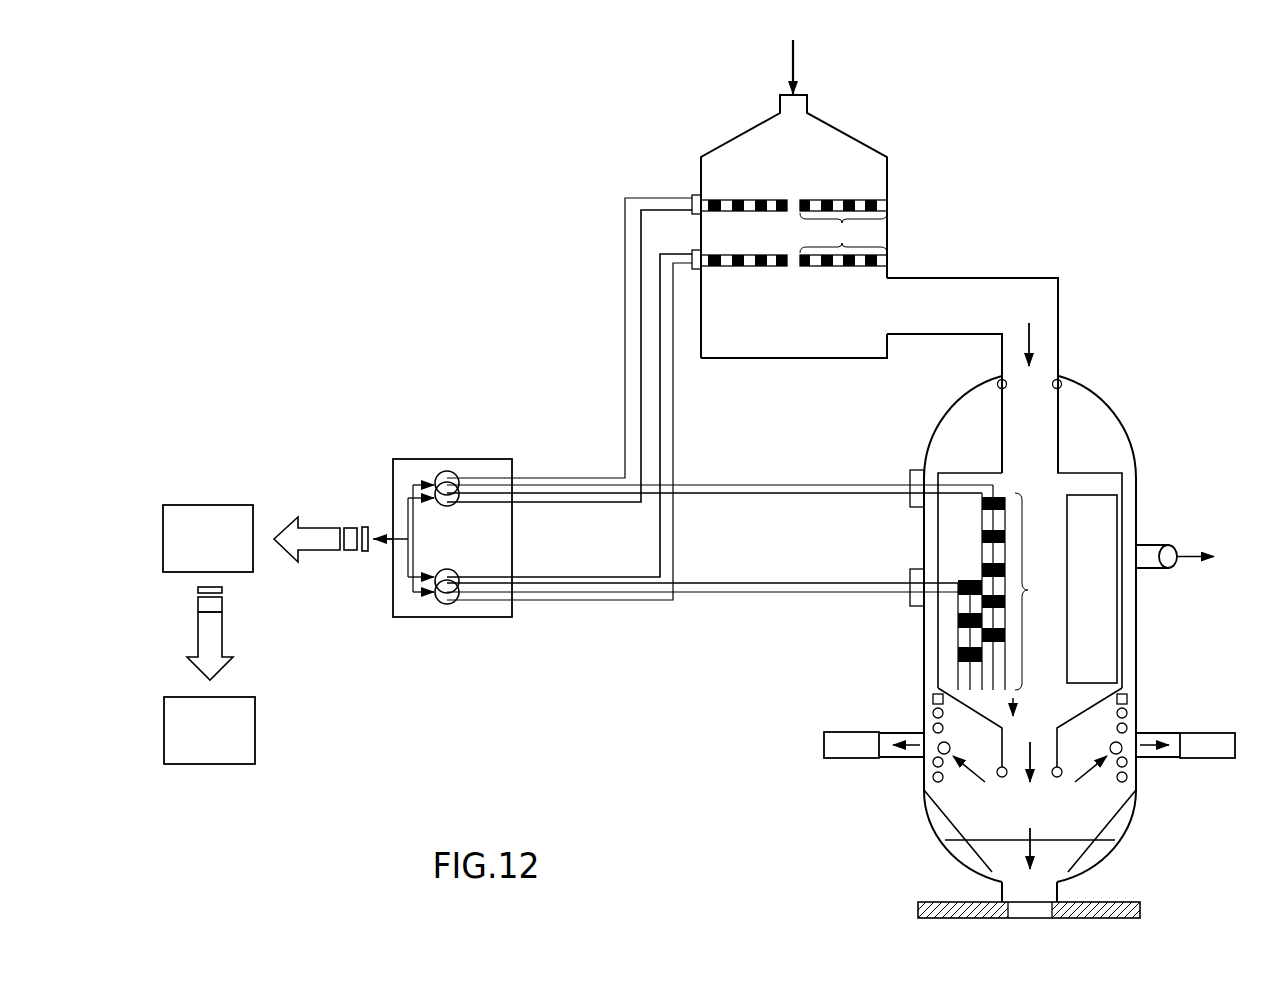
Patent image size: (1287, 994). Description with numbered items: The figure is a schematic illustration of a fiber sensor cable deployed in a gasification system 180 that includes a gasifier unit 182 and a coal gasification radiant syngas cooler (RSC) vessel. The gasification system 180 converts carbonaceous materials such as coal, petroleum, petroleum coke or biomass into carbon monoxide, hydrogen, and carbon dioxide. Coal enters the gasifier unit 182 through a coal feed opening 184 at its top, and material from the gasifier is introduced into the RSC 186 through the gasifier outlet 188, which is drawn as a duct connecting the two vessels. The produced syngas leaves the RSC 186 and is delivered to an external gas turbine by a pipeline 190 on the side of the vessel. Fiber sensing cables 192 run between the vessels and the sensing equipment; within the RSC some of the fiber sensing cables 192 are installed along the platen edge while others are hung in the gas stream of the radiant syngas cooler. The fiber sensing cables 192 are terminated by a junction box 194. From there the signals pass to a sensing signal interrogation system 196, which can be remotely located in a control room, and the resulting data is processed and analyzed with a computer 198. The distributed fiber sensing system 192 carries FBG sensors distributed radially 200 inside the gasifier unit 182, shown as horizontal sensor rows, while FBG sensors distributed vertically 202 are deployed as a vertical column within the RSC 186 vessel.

The gasification system 180 is at (219, 169).
The gasifier unit 182 is at (738, 126).
The coal feed opening 184 is at (793, 62).
The radiant syngas cooler (RSC) 186 is at (1122, 410).
The gasifier outlet 188 is at (1032, 343).
The pipeline 190 is at (1188, 552).
The fiber sensing cables 192 is at (650, 196).
The junction box 194 is at (450, 459).
The sensing signal interrogation system 196 is at (190, 551).
The computer 198 is at (191, 743).
The radially distributed FBG sensors 200 is at (794, 233).
The vertically distributed FBG sensors 202 is at (1010, 587).